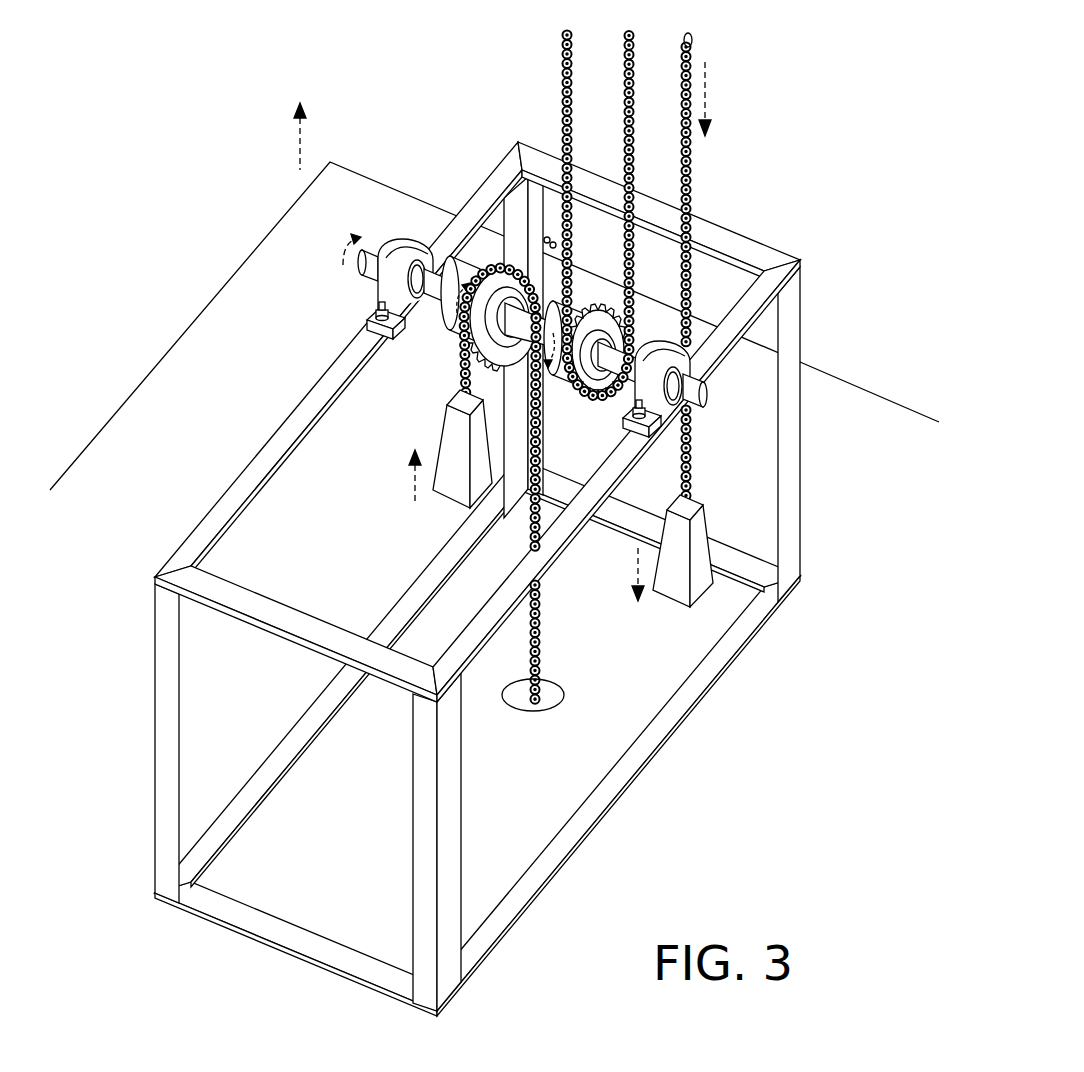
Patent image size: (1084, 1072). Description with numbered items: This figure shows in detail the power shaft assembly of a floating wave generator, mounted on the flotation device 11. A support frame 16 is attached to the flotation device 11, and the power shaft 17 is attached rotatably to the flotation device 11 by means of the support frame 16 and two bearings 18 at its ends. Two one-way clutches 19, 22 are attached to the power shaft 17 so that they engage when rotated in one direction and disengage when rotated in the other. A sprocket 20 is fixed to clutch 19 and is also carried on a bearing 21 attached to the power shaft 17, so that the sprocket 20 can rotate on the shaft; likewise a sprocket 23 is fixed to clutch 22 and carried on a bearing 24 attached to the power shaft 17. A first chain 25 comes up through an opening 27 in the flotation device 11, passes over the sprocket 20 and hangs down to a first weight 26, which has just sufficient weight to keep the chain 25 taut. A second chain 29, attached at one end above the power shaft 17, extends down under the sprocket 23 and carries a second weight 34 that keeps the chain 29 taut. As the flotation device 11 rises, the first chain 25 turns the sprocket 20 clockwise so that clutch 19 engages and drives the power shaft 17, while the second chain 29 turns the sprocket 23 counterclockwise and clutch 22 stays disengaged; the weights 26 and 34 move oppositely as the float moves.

The flotation device 11 is at (200, 330).
The support frame 16 is at (741, 246).
The power shaft 17 is at (373, 252).
The bearings 18 is at (380, 287).
The one-way clutch 19 is at (455, 320).
The sprocket 20 is at (505, 283).
The bearing 21 is at (460, 378).
The one-way clutch 22 is at (547, 323).
The sprocket 23 is at (598, 304).
The bearing 24 is at (610, 337).
The first chain 25 is at (541, 650).
The first weight 26 is at (450, 492).
The opening 27 is at (555, 700).
The second chain 29 is at (559, 47).
The second weight 34 is at (680, 592).